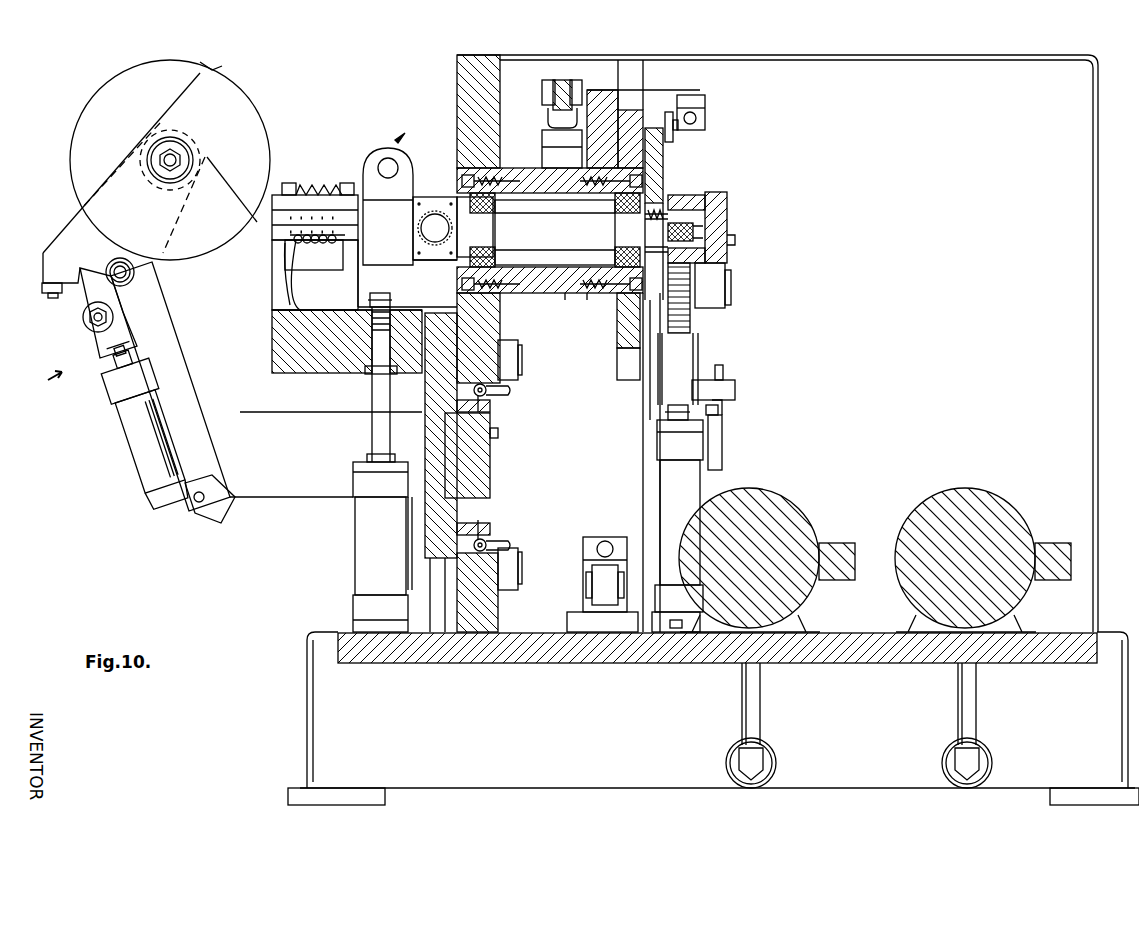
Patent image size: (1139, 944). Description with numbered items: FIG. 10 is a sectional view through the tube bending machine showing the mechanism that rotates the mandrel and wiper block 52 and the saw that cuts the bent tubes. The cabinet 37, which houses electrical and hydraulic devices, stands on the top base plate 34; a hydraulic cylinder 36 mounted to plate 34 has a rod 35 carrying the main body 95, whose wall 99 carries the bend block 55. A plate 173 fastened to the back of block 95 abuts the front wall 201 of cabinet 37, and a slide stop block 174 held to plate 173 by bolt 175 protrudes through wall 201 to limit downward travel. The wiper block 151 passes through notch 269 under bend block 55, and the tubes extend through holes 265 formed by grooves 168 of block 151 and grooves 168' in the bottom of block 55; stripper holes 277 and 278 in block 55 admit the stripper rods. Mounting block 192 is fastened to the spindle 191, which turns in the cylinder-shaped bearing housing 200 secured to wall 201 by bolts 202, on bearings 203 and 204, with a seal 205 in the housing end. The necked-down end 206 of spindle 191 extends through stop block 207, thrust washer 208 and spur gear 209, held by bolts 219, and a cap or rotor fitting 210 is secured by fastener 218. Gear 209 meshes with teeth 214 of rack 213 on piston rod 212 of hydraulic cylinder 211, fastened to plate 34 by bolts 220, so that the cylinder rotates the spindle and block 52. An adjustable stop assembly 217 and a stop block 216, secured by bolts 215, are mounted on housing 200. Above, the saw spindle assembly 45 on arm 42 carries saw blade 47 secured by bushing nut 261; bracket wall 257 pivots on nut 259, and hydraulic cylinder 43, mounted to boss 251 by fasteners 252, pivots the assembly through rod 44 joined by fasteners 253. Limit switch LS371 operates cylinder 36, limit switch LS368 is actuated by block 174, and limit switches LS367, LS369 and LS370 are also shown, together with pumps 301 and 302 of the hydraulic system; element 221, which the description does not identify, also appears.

The cabinet 37 is at (938, 60).
The top base plate 34 is at (425, 662).
The saw blade 47 is at (170, 160).
The bushing nut 261 is at (166, 150).
The wall of U-shaped bracket 257 is at (70, 236).
The nut 259 is at (128, 276).
The fasteners 253 is at (85, 318).
The arm 42 is at (185, 325).
The hydraulic cylinder 43 is at (150, 460).
The piston rod 44 is at (115, 358).
The saw spindle assembly 45 is at (40, 380).
The fasteners 252 is at (190, 504).
The boss 251 is at (192, 513).
The bend block 55 is at (272, 222).
The stripper holes 277 is at (300, 195).
The holes 265 is at (292, 270).
The grooves 168 is at (349, 244).
The grooves 168' is at (348, 223).
The stripper holes 278 is at (292, 256).
The wall 99 is at (280, 312).
The notch 269 is at (278, 345).
The mandrel and wiper block 52 is at (395, 191).
The mounting block 192 is at (435, 197).
The seal 205 is at (455, 262).
The wiper block 151 is at (392, 285).
The main body 95 is at (305, 372).
The piston rod 35 is at (372, 432).
The hydraulic cylinder 36 is at (355, 540).
The plate 173 is at (430, 510).
The slide stop block 174 is at (490, 470).
The bolt 175 is at (500, 433).
The front wall 201 is at (492, 610).
The bearing housing 200 is at (525, 168).
The bolts 202 is at (458, 178).
The bearing 204 is at (618, 208).
The end of spindle 206 is at (650, 246).
The bearing 203 is at (482, 165).
The adjustable stop assembly 217 is at (598, 100).
The stop block 207 is at (650, 128).
The bolts 215 is at (665, 175).
The actuator plate 221 is at (675, 142).
The limit switch LS371 is at (706, 116).
The spur gear 209 is at (700, 195).
The bolts 219 is at (727, 205).
The fastener 218 is at (720, 228).
The cap or rotor fitting 210 is at (728, 250).
The thrust washer 208 is at (724, 270).
The limit switch LS369 is at (728, 290).
The teeth 214 is at (695, 308).
The rack 213 is at (700, 352).
The piston rod 212 is at (668, 412).
The hydraulic cylinder 211 is at (660, 495).
The bolts 220 is at (675, 632).
The limit switch LS370 is at (724, 445).
The stop block 216 is at (618, 340).
The spindle 191 is at (565, 300).
The limit switch LS367 is at (520, 380).
The limit switch LS368 is at (520, 560).
The pump 301 is at (780, 505).
The pump 302 is at (1000, 505).